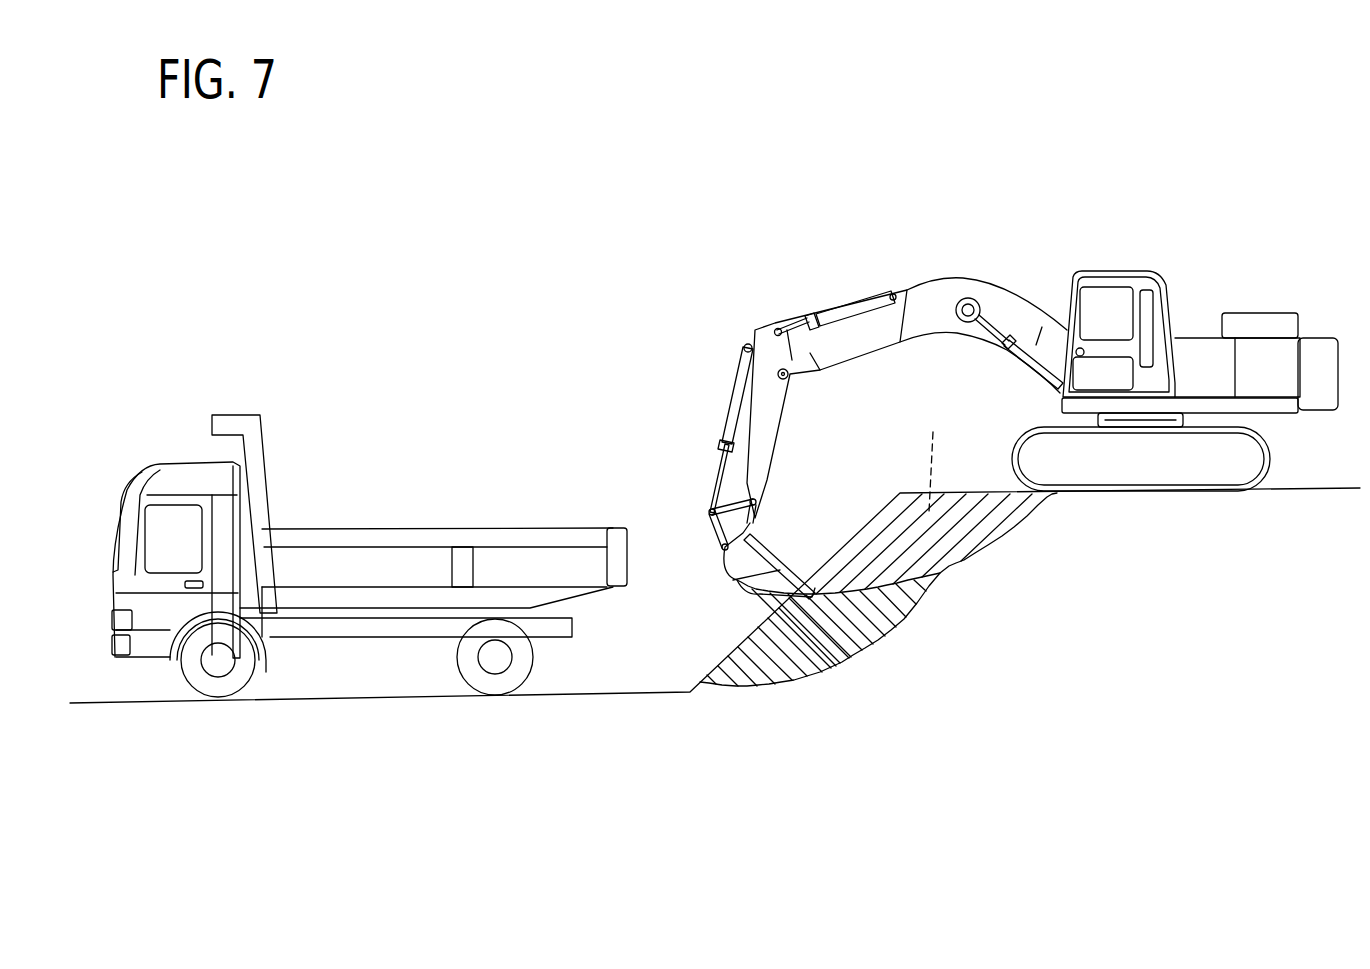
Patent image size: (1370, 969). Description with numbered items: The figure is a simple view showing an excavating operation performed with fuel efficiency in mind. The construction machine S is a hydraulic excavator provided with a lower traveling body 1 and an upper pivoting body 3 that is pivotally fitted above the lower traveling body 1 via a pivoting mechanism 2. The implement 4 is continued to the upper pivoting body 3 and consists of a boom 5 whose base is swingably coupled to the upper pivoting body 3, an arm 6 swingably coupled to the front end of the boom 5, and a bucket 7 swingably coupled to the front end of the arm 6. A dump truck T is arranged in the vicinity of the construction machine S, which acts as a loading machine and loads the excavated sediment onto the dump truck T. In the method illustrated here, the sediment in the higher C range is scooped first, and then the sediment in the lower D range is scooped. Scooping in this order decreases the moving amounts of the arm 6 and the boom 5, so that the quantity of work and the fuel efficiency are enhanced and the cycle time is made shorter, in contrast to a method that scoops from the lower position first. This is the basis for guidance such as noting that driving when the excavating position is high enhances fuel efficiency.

The lower traveling body 1 is at (1198, 496).
The pivoting mechanism 2 is at (1136, 442).
The upper pivoting body 3 is at (1202, 341).
The implement 4 is at (888, 397).
The boom 5 is at (1015, 288).
The arm 6 is at (773, 405).
The bucket 7 is at (778, 552).
The C range C is at (935, 451).
The D range D is at (860, 658).
The construction machine S is at (1023, 394).
The dump truck T is at (398, 492).